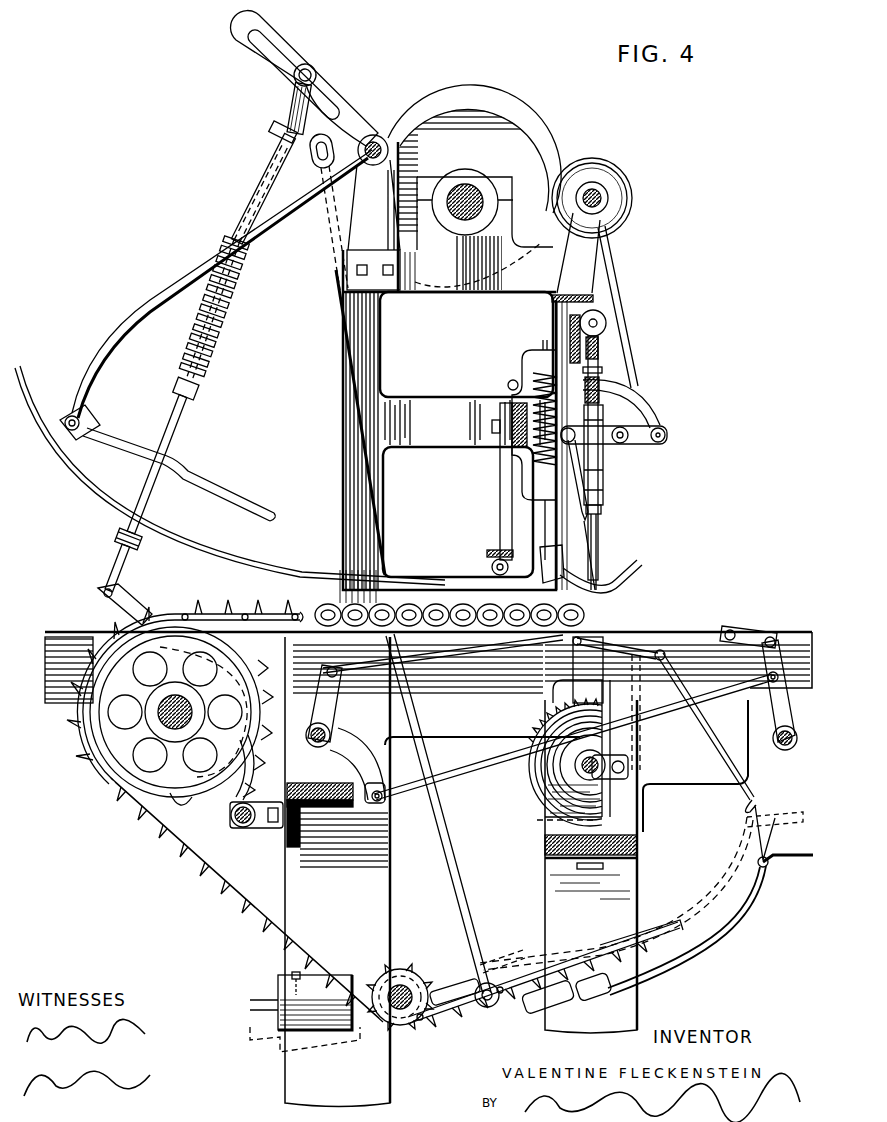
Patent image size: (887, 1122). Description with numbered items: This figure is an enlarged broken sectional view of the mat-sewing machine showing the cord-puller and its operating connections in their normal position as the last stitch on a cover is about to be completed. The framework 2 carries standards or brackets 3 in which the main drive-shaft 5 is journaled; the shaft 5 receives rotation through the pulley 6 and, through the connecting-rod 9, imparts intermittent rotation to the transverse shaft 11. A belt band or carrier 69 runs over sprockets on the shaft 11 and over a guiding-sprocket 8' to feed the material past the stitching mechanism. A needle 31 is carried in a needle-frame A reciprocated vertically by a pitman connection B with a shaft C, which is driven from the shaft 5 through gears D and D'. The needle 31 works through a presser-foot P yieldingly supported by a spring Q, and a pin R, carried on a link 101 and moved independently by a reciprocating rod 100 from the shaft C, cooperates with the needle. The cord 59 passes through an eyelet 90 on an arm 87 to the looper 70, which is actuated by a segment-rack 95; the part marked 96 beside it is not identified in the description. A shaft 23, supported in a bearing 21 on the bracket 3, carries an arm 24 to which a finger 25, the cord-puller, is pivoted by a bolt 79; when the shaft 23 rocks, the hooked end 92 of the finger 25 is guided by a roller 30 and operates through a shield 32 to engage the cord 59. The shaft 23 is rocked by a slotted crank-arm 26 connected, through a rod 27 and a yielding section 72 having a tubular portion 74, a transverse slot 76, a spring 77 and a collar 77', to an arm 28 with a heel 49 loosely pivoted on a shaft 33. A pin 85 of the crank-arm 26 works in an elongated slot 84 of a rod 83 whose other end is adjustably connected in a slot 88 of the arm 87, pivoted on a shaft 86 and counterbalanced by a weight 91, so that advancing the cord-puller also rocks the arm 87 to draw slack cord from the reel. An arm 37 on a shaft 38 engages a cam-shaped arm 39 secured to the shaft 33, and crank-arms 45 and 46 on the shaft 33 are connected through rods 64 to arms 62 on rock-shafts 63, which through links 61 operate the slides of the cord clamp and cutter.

The framework 2 is at (620, 893).
The standards or brackets 3 is at (340, 413).
The main drive-shaft 5 is at (455, 215).
The pulley 6 is at (515, 126).
The guiding-sprocket 8' is at (400, 980).
The connecting-rod 9 is at (140, 829).
The shaft 11 is at (160, 716).
The bearing 21 is at (335, 222).
The shaft 23 is at (382, 138).
The arm 24 is at (142, 304).
The finger 25 is at (122, 444).
The crank-arm 26 is at (326, 92).
The rod 27 is at (174, 421).
The arm 28 is at (132, 601).
The roller 30 is at (492, 566).
The needle 31 is at (597, 538).
The shield 32 is at (252, 572).
The shaft 33 is at (332, 731).
The arm 37 is at (235, 806).
The shaft 38 is at (246, 829).
The arm 39 is at (255, 751).
The crank-arm 45 is at (352, 759).
The crank-arm 46 is at (332, 703).
The heel or projection 49 is at (183, 806).
The thread or cord 59 is at (730, 761).
The link 61 is at (755, 631).
The arm 62 is at (772, 714).
The rock-shaft 63 is at (787, 751).
The rod 64 is at (440, 673).
The belt band or carrier 69 is at (232, 621).
The looper 70 is at (573, 649).
The section 72 is at (292, 99).
The tubular portion 74 is at (268, 157).
The transverse slot 76 is at (242, 215).
The spring 77 is at (219, 306).
The collar 77' is at (207, 382).
The bolt 79 is at (66, 432).
The rod 83 is at (348, 339).
The elongated slot 84 is at (322, 170).
The pin or projection 85 is at (333, 147).
The shaft 86 is at (413, 986).
The arm 87 is at (262, 1013).
The slot 88 is at (450, 1034).
The eyelet 90 is at (765, 873).
The weight 91 is at (292, 974).
The hooked end 92 is at (272, 512).
The segment-rack 95 is at (560, 769).
The shaft 96 is at (585, 779).
The reciprocating rod 100 is at (620, 316).
The link 101 is at (642, 443).
The needle-frame A is at (500, 181).
The pitman connection B is at (598, 276).
The shaft C is at (608, 199).
The gear D is at (503, 209).
The gear D' is at (599, 190).
The presser-foot P is at (591, 574).
The spring Q is at (530, 446).
The pin R is at (598, 483).